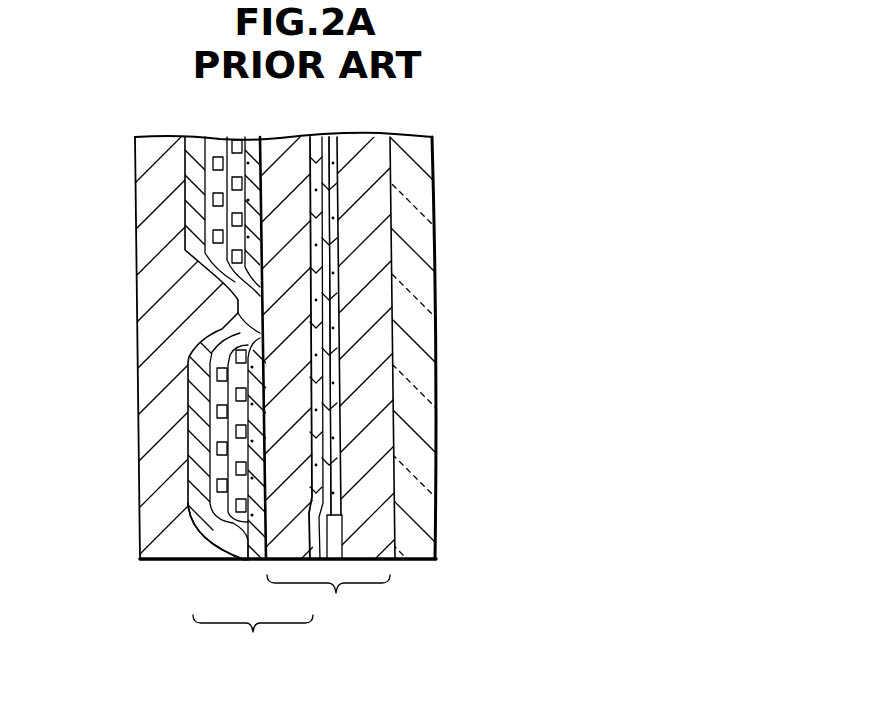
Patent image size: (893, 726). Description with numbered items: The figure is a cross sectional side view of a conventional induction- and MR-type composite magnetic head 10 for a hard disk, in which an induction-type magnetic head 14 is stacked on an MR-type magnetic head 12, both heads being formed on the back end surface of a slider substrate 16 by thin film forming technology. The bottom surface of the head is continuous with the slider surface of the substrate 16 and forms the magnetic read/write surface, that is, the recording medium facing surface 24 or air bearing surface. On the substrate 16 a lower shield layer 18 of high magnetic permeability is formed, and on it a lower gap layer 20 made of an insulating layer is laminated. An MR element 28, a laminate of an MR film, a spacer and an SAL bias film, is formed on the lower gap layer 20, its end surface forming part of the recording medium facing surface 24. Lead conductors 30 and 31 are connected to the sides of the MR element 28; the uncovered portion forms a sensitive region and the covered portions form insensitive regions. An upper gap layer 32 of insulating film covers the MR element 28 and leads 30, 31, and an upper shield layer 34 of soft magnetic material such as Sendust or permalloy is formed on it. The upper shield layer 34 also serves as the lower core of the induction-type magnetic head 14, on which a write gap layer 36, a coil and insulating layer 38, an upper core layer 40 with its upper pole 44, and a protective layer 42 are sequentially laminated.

The induction- and MR-type composite magnetic head 10 is at (465, 148).
The MR-type magnetic head 12 is at (328, 601).
The induction-type magnetic head 14 is at (253, 641).
The substrate 16 is at (431, 224).
The lower shield layer 18 is at (380, 289).
The lower gap layer 20 is at (357, 333).
The recording medium facing surface 24 is at (418, 562).
The MR element 28 is at (332, 530).
The lead conductor 30 is at (333, 396).
The lead conductor 31 is at (446, 326).
The upper gap layer 32 is at (338, 428).
The upper shield layer 34 is at (305, 477).
The write gap layer 36 is at (243, 551).
The coil and insulating layer 38 is at (203, 432).
The upper core layer 40 is at (200, 472).
The protective layer 42 is at (172, 350).
The upper pole 44 is at (250, 566).